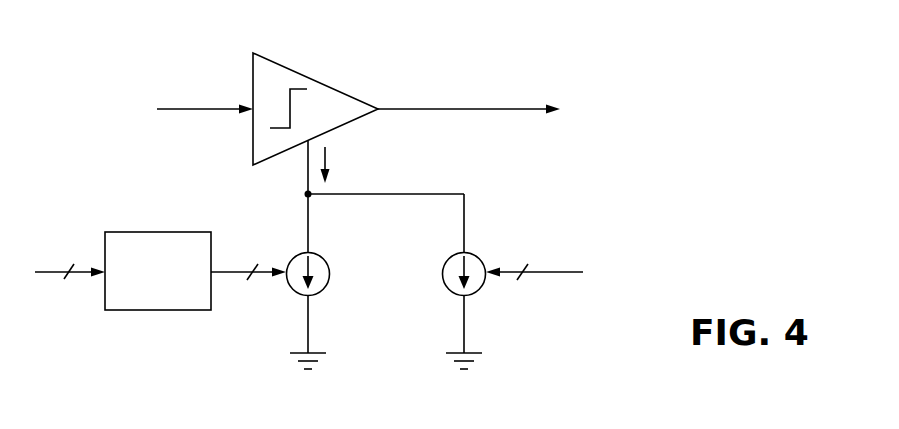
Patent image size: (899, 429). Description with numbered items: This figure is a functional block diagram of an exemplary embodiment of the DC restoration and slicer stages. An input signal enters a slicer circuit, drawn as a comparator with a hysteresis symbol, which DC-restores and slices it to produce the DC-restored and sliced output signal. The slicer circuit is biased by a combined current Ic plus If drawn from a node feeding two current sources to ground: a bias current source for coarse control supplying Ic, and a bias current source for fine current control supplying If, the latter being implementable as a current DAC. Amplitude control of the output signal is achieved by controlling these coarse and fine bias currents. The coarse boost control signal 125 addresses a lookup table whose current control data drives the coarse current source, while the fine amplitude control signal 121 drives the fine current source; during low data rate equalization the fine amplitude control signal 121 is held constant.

The coarse boost control signal 125 is at (42, 270).
The fine amplitude control signal 121 is at (549, 270).